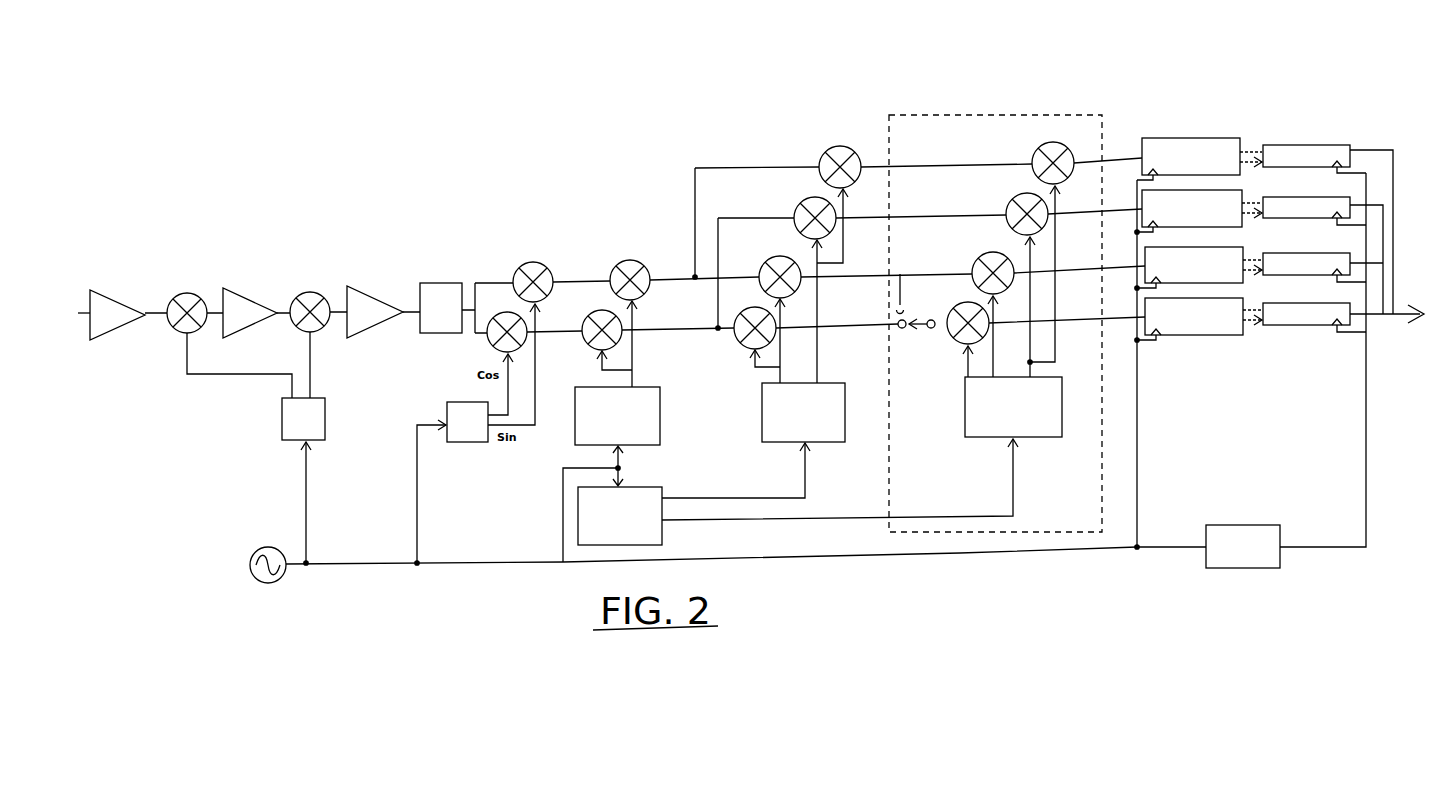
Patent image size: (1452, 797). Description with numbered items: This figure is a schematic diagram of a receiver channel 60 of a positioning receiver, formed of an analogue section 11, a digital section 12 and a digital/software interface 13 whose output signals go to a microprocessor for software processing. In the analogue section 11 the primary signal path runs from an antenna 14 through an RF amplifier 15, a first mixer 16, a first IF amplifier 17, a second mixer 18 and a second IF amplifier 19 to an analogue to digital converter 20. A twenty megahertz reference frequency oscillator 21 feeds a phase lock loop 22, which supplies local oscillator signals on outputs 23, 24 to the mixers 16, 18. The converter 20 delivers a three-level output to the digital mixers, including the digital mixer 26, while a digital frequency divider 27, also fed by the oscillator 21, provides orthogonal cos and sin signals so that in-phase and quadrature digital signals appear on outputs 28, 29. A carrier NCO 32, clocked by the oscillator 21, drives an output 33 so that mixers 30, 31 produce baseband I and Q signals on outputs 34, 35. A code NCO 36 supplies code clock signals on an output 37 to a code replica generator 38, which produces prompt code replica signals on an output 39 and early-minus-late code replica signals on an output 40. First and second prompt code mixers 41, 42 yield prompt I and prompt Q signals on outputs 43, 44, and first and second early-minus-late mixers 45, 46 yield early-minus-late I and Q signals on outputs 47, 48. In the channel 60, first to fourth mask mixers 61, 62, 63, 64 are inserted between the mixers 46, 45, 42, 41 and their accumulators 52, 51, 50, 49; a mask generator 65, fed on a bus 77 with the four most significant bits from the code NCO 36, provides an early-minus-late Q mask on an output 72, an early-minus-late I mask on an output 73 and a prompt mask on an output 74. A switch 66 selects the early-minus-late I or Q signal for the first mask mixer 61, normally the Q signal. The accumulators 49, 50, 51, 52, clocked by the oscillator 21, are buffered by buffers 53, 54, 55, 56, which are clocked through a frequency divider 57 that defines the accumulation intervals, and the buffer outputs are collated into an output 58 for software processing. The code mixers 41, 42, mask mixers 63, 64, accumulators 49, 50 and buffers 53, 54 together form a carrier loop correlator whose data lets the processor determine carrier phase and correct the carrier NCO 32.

The analogue section 11 is at (366, 138).
The digital section 12 is at (735, 40).
The digital/software interface 13 is at (1170, 32).
The antenna 14 is at (88, 229).
The radio frequency amplifier 15 is at (112, 300).
The first mixer 16 is at (190, 293).
The first intermediate frequency amplifier 17 is at (243, 290).
The second mixer 18 is at (312, 292).
The second intermediate frequency amplifier 19 is at (365, 293).
The analogue to digital converter 20 is at (460, 283).
The reference frequency oscillator 21 is at (250, 565).
The phase lock loop 22 is at (327, 421).
The local oscillator output 23 is at (210, 378).
The local oscillator output 24 is at (318, 357).
The digital mixer 26 is at (545, 262).
The digital frequency divider 27 is at (458, 445).
The mixer output 28 is at (581, 274).
The mixer output 29 is at (548, 335).
The mixer 30 is at (627, 258).
The mixer 31 is at (602, 330).
The carrier numerically controlled oscillator 32 is at (662, 425).
The carrier NCO output 33 is at (633, 363).
The baseband I output 34 is at (675, 270).
The baseband Q output 35 is at (680, 328).
The code numerically controlled oscillator 36 is at (662, 540).
The code clock output 37 is at (738, 495).
The code replica generator 38 is at (833, 443).
The prompt code replica output 39 is at (822, 341).
The early-minus-late code replica output 40 is at (785, 350).
The first prompt code mixer 41 is at (832, 150).
The second prompt code mixer 42 is at (797, 205).
The prompt I output 43 is at (866, 163).
The prompt Q output 44 is at (871, 219).
The first early-minus-late mixer 45 is at (765, 258).
The second early-minus-late mixer 46 is at (749, 308).
The early-minus-late I output 47 is at (872, 275).
The early-minus-late Q output 48 is at (868, 328).
The accumulator 49 is at (1190, 130).
The accumulator 50 is at (1237, 190).
The accumulator 51 is at (1173, 284).
The accumulator 52 is at (1228, 336).
The buffer 53 is at (1330, 143).
The buffer 54 is at (1300, 199).
The buffer 55 is at (1303, 252).
The buffer 56 is at (1306, 304).
The frequency divider 57 is at (1248, 569).
The output 58 is at (1405, 324).
The receiver channel 60 is at (299, 712).
The first mask mixer 61 is at (955, 307).
The second mask mixer 62 is at (973, 257).
The third mask mixer 63 is at (1005, 203).
The fourth mask mixer 64 is at (1033, 145).
The mask generator 65 is at (1040, 438).
The switch 66 is at (913, 330).
The early-minus-late Q output 72 is at (997, 345).
The early-minus-late I output 73 is at (965, 372).
The prompt output 74 is at (1062, 343).
The bus 77 is at (810, 520).